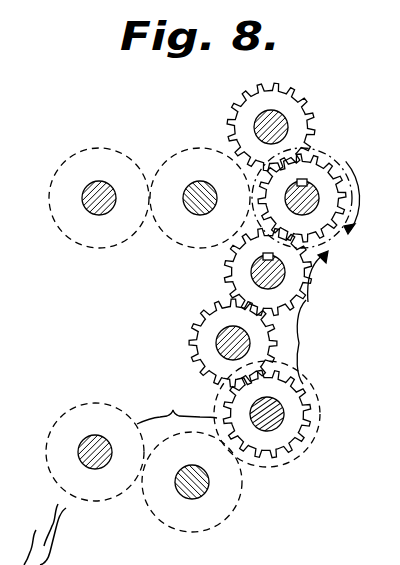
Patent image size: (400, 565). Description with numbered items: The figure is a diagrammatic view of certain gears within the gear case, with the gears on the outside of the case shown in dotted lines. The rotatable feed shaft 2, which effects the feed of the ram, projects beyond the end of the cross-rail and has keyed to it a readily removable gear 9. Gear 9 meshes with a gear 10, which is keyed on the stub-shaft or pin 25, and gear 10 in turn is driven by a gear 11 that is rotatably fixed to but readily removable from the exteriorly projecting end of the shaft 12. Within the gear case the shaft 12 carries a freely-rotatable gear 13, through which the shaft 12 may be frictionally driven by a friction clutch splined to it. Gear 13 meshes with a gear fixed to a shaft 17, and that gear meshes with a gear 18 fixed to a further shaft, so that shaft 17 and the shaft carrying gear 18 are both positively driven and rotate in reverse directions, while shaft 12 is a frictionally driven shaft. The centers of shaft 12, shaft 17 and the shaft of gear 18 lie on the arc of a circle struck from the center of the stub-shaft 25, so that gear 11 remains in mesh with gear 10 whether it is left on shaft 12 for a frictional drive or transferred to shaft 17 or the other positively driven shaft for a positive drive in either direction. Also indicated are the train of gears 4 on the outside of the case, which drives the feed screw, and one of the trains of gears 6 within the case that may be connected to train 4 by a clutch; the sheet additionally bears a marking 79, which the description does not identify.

The feed shaft 2 is at (100, 181).
The train of gears 4 is at (144, 458).
The train of gears 6 is at (252, 343).
The gear 9 is at (99, 182).
The gear 10 is at (203, 150).
The gear 11 is at (333, 163).
The shaft 12 is at (272, 121).
The gear 13 is at (298, 114).
The shaft 17 is at (312, 212).
The gear 18 is at (276, 281).
The stub-shaft 25 is at (188, 183).
The gear 79 is at (262, 275).